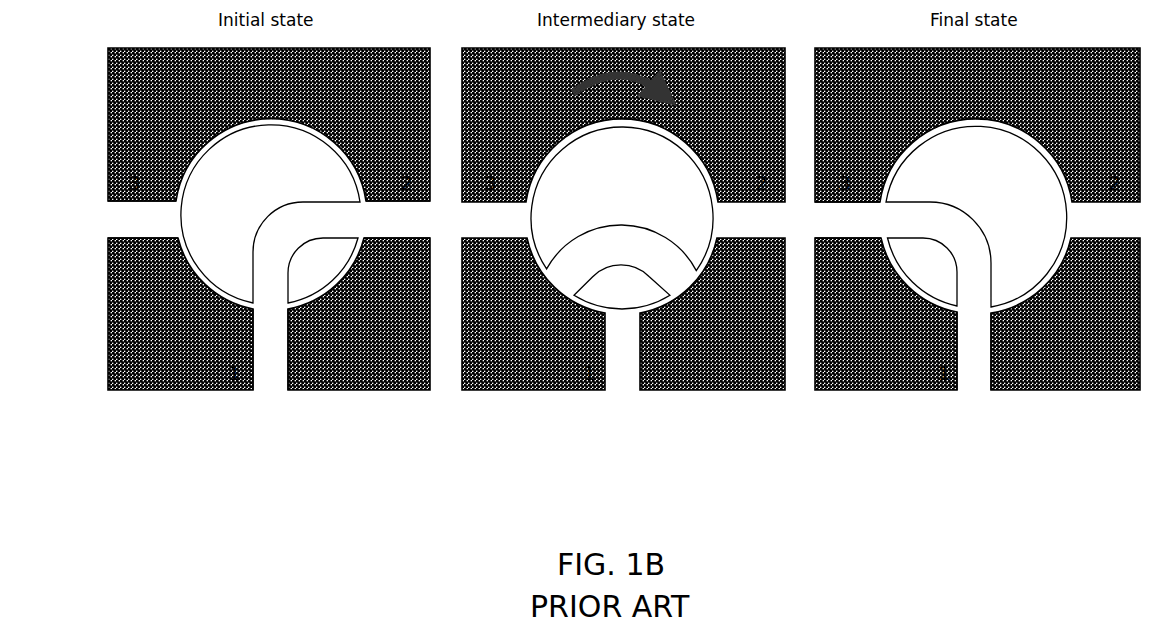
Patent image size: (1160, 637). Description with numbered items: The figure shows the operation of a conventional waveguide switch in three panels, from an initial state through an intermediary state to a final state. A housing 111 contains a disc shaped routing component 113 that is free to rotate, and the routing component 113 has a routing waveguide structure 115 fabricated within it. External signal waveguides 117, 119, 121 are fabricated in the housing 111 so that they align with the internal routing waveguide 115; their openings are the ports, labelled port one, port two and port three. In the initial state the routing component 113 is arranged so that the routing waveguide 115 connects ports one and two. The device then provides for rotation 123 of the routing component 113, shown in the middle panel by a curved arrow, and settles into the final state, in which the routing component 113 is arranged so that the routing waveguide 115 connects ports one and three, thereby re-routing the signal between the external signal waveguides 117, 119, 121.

The housing 111 is at (155, 77).
The routing component 113 is at (245, 160).
The routing waveguide structure 115 is at (290, 220).
The external signal waveguide 117 is at (272, 353).
The external signal waveguide 119 is at (404, 220).
The external signal waveguide 121 is at (122, 218).
The rotation 123 is at (601, 87).